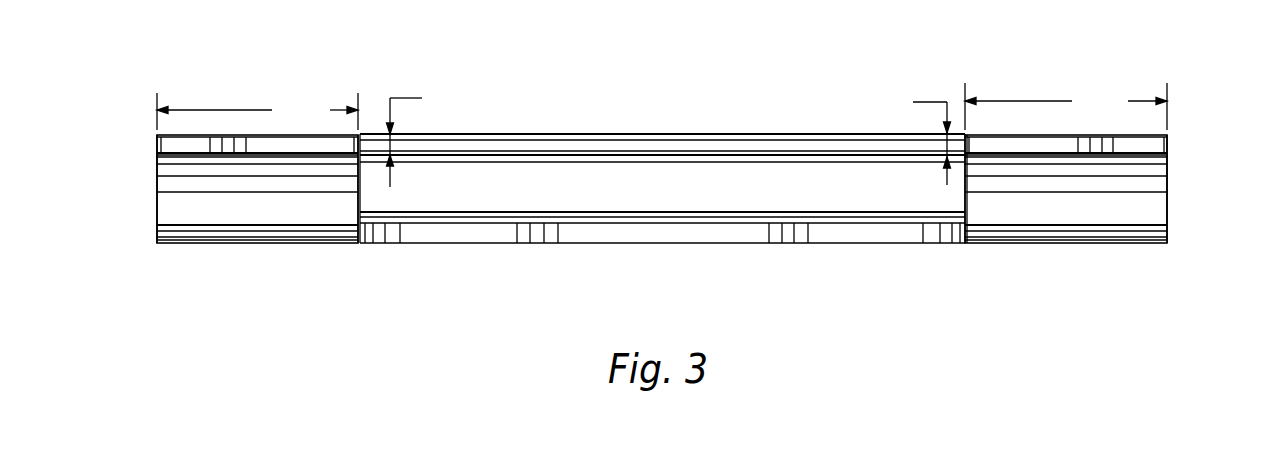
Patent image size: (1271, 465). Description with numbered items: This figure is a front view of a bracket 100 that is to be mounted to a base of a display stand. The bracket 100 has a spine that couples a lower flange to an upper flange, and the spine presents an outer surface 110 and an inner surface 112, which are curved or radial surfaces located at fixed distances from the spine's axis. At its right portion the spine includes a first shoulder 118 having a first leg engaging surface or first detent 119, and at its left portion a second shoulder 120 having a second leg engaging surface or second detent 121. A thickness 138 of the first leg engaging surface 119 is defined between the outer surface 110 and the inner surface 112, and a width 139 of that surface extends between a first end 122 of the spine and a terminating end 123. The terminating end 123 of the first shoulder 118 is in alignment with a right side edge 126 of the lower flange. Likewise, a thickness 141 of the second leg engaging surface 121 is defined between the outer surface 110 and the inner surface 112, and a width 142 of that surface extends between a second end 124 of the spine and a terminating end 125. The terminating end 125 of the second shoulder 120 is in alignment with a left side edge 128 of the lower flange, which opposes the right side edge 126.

The bracket 100 is at (789, 67).
The outer surface 110 is at (618, 203).
The inner surface 112 is at (292, 222).
The first shoulder 118 is at (1008, 161).
The first leg engaging surface 119 is at (1033, 143).
The second shoulder 120 is at (263, 164).
The second leg engaging surface 121 is at (275, 143).
The first end 122 is at (1168, 137).
The terminating end 123 is at (970, 137).
The second end 124 is at (157, 138).
The terminating end 125 is at (360, 134).
The right side edge 126 is at (967, 235).
The left side edge 128 is at (354, 235).
The thickness 138 is at (910, 138).
The width 139 is at (1066, 106).
The thickness 141 is at (429, 138).
The width 142 is at (257, 111).